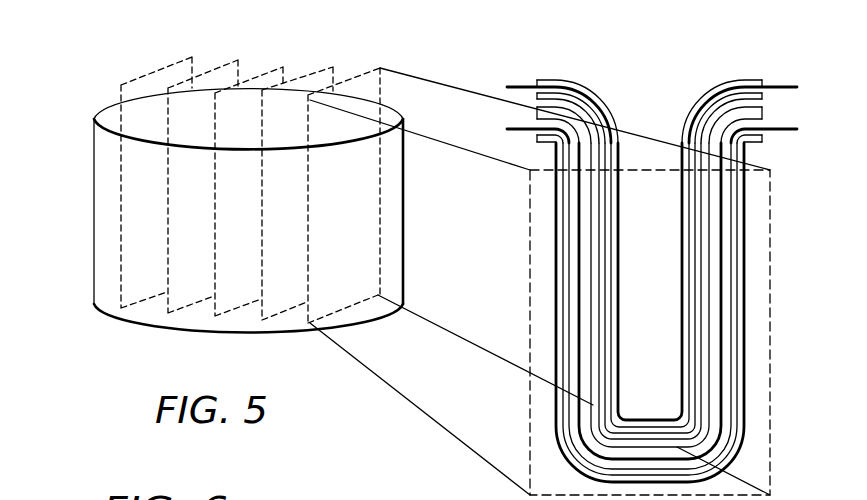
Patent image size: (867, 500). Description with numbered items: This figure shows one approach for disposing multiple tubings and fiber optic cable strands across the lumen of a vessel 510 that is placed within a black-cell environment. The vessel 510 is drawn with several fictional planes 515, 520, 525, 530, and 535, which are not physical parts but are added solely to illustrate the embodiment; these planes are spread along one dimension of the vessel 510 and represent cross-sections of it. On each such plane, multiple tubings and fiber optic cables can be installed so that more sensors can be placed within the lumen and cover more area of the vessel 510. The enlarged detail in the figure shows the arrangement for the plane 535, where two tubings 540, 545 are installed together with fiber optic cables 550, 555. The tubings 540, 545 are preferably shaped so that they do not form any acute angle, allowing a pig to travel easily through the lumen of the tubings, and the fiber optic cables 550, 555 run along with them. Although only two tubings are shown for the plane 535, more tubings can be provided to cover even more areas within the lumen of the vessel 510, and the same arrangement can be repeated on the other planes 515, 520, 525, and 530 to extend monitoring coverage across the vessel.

The vessel 510 is at (110, 103).
The fictional plane 515 is at (178, 62).
The fictional plane 520 is at (222, 62).
The fictional plane 525 is at (270, 68).
The fictional plane 530 is at (317, 72).
The fictional plane 535 is at (363, 75).
The tubing 540 is at (583, 137).
The tubing 545 is at (742, 77).
The fiber optic cable 550 is at (528, 127).
The fiber optic cable 555 is at (785, 88).